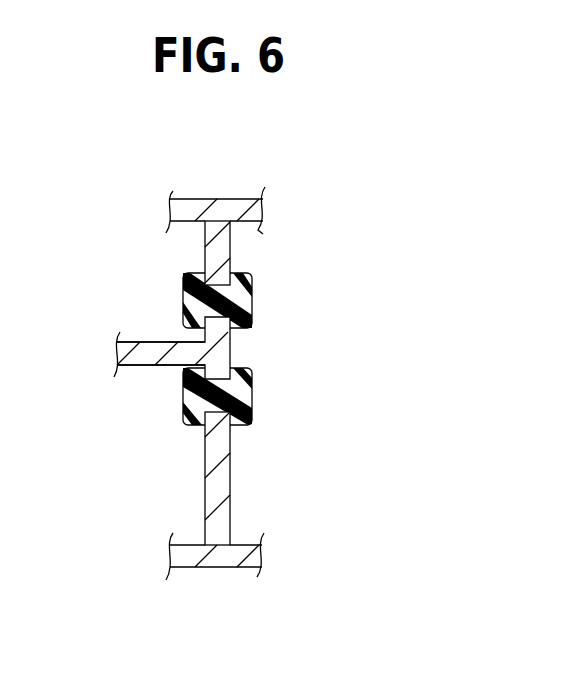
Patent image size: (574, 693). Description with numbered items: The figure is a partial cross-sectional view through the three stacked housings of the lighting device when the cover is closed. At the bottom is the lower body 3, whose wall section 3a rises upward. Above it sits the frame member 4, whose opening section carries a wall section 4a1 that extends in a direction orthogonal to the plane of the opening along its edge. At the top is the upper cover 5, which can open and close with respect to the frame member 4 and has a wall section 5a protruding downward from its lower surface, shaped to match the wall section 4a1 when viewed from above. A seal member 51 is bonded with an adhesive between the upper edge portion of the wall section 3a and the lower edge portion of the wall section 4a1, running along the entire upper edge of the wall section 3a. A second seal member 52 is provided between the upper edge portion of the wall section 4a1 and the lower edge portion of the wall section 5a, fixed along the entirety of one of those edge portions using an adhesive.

The lower body 3 is at (215, 568).
The wall section 3a is at (205, 473).
The frame member 4 is at (231, 348).
The wall section 4a1 is at (204, 340).
The upper cover 5 is at (248, 199).
The wall section 5a is at (205, 252).
The seal member 51 is at (253, 395).
The seal member 52 is at (253, 297).